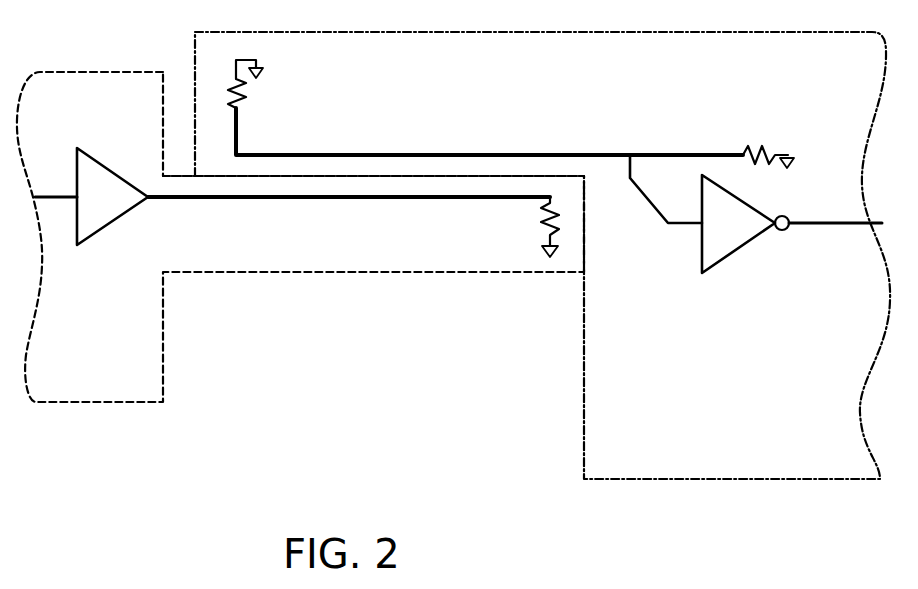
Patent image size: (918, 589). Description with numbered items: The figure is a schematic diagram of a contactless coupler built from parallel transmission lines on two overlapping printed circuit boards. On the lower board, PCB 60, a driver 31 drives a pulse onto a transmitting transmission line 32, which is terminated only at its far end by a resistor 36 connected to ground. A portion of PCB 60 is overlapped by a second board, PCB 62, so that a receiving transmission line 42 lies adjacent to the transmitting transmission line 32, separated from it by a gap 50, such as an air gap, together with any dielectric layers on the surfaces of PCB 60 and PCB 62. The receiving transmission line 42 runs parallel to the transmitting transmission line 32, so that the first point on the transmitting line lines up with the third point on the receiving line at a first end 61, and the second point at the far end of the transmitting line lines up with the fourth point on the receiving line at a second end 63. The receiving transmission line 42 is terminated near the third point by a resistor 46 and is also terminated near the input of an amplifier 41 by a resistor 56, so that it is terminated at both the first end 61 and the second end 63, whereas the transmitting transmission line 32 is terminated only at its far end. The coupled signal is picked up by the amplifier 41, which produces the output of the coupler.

The driver 31 is at (91, 196).
The transmitting transmission line 32 is at (335, 199).
The resistor 36 is at (536, 230).
The amplifier 41 is at (792, 224).
The receiving transmission line 42 is at (383, 135).
The resistor 46 is at (250, 96).
The gap 50 is at (373, 177).
The resistor 56 is at (762, 148).
The PCB 60 is at (300, 237).
The first end 61 is at (290, 152).
The PCB 62 is at (542, 255).
The second end 63 is at (599, 152).